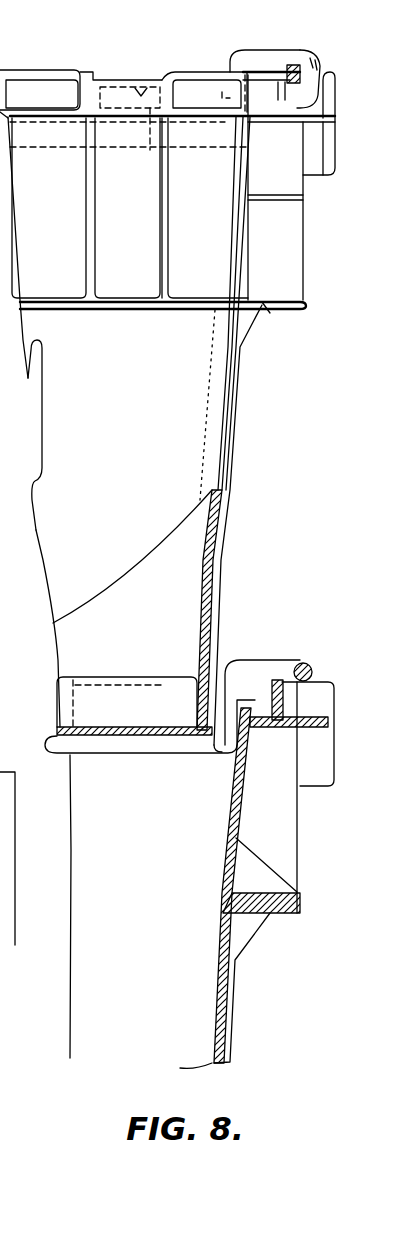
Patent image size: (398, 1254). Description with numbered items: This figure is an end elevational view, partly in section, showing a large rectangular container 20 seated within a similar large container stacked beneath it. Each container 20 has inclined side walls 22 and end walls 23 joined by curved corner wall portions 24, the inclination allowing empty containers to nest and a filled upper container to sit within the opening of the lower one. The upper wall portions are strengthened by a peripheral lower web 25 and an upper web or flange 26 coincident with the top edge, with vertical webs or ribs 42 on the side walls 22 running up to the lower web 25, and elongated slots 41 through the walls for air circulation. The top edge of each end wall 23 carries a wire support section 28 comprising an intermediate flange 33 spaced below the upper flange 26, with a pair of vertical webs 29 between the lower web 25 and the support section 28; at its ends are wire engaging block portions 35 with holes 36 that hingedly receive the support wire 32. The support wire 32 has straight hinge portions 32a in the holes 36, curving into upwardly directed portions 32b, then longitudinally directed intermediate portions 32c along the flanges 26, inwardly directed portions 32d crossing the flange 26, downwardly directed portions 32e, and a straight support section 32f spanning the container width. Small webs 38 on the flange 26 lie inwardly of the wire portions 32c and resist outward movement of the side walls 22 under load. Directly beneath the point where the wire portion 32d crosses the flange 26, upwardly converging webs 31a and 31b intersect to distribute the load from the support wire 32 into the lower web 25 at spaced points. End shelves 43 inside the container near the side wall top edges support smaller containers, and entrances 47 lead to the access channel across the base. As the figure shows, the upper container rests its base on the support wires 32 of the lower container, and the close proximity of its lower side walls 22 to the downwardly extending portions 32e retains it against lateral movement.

The rectangular container 20 is at (243, 506).
The side wall 22 is at (220, 557).
The end wall 23 is at (100, 473).
The curved corner wall portion 24 is at (222, 376).
The lower web 25 is at (270, 313).
The upper web or flange 26 is at (55, 70).
The wire support section 28 is at (90, 98).
The vertical web 29 is at (163, 230).
The upwardly converging web 31a is at (285, 251).
The upwardly converging web 31b is at (277, 846).
The support wire 32 is at (258, 58).
The straight hinge portion 32a is at (191, 97).
The upwardly directed portion 32b is at (315, 67).
The longitudinally directed intermediate portion 32c is at (300, 664).
The inwardly directed portion 32d is at (283, 62).
The downwardly directed portion 32e is at (217, 108).
The straight support section 32f is at (150, 148).
The intermediate flange 33 is at (33, 114).
The support wire engaging block portion 35 is at (122, 95).
The hole 36 is at (151, 108).
The small web 38 is at (292, 84).
The elongated slot 41 is at (38, 409).
The vertical web or rib 42 is at (230, 453).
The end shelf 43 is at (225, 746).
The access channel entrance 47 is at (117, 700).